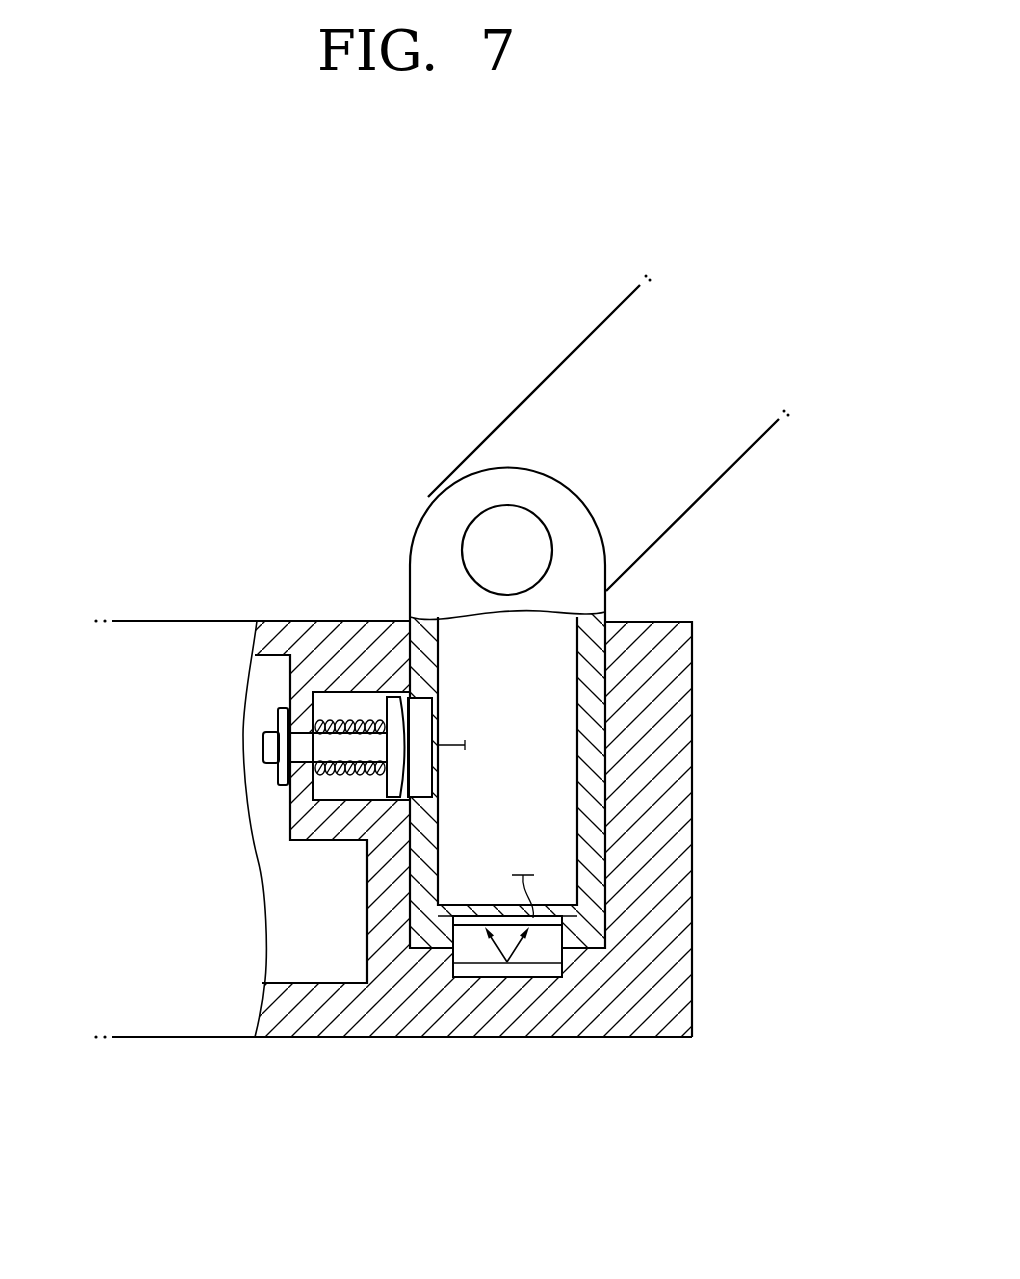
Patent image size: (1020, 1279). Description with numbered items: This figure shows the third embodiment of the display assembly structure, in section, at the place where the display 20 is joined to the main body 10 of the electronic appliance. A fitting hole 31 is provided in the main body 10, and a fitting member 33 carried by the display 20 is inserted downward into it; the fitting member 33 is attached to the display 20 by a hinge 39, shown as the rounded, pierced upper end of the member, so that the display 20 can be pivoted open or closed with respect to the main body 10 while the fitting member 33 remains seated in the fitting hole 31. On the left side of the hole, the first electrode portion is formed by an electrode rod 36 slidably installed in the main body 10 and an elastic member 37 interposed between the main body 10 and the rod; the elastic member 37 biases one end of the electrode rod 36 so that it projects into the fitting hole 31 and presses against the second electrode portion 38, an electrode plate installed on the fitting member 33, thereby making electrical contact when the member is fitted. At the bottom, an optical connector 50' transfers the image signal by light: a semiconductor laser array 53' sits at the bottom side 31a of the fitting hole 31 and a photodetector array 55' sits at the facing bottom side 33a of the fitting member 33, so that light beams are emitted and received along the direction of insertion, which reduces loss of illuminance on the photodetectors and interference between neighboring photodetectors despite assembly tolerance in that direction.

The main body 10 is at (185, 1056).
The display 20 is at (496, 378).
The fitting hole 31 is at (590, 796).
The bottom side of the fitting hole 31a is at (525, 965).
The fitting member 33 is at (582, 592).
The bottom side of the fitting member 33a is at (476, 917).
The electrode rod 36 is at (308, 740).
The elastic member 37 is at (378, 723).
The second electrode portion 38 is at (422, 710).
The hinge 39 is at (475, 515).
The optical connector 50' is at (669, 938).
The semiconductor laser array 53' is at (616, 951).
The photodetector array 55' is at (616, 901).